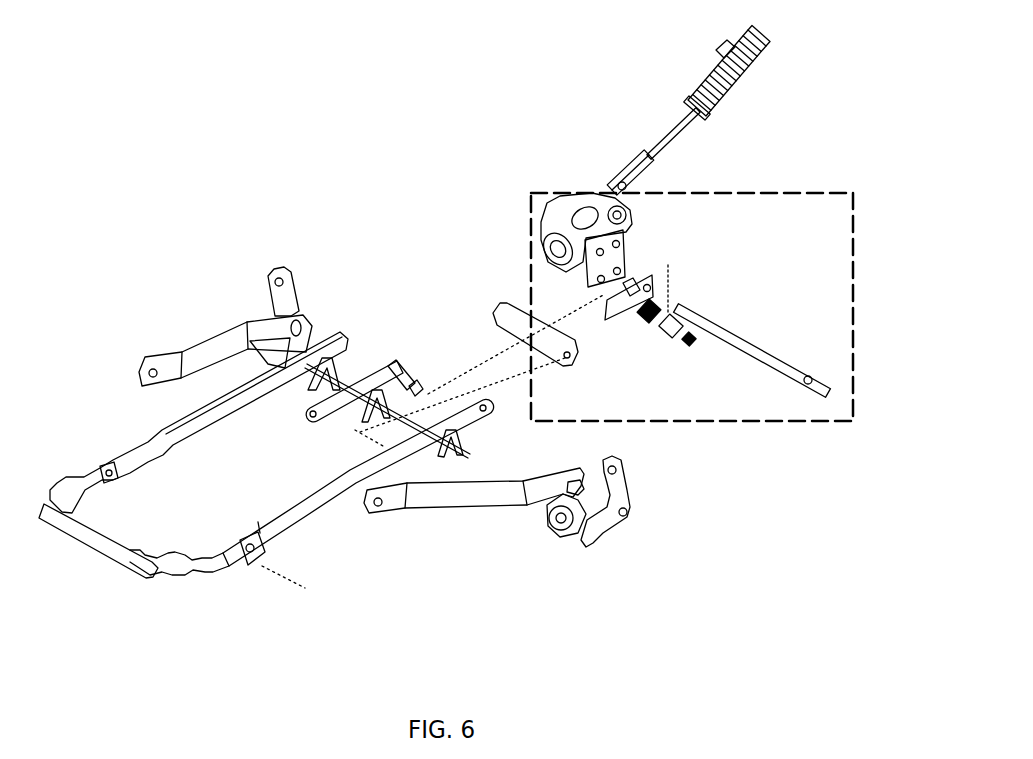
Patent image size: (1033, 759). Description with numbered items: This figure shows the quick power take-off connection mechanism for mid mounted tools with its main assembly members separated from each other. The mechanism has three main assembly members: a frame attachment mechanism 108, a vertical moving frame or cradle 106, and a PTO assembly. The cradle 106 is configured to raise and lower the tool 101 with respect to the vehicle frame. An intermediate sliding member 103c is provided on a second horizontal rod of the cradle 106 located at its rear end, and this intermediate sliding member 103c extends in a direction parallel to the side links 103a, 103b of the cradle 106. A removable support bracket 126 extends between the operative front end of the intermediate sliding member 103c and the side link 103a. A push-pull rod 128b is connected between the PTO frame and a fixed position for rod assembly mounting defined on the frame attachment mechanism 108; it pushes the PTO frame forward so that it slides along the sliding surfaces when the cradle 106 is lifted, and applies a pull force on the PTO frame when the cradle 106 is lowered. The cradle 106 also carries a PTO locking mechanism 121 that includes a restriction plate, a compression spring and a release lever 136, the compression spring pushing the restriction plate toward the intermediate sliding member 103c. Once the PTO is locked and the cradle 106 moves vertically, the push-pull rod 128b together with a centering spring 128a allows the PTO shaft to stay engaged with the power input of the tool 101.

The tool 101 is at (156, 330).
The side link 103a is at (310, 499).
The side link 103b is at (212, 415).
The intermediate sliding member 103c is at (333, 414).
The cradle 106 is at (167, 228).
The frame attachment mechanism 108 is at (527, 38).
The PTO locking mechanism 121 is at (748, 191).
The removable support bracket 126 is at (527, 313).
The centering spring 128a is at (749, 65).
The push-pull rod 128b is at (652, 165).
The release lever 136 is at (731, 333).